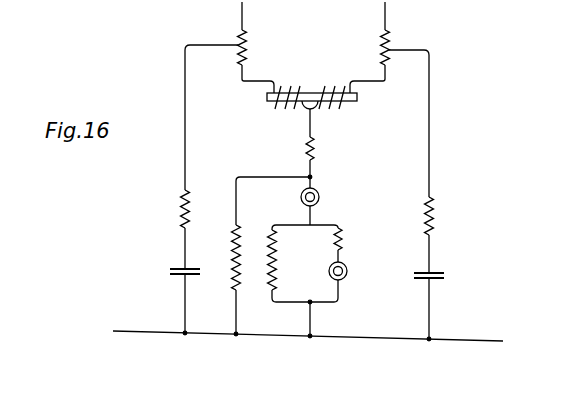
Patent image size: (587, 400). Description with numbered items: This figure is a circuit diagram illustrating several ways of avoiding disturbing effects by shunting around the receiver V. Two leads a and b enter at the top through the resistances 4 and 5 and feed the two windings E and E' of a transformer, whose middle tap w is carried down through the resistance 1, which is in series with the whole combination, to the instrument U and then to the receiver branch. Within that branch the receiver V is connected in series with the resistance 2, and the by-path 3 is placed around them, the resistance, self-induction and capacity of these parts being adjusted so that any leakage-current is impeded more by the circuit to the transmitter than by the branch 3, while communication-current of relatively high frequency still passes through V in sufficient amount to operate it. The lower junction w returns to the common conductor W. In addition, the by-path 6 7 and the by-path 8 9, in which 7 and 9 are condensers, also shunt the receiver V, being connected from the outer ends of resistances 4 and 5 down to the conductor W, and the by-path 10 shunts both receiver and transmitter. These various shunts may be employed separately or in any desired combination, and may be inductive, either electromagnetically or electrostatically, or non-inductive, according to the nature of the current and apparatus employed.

The resistance 1 is at (316, 148).
The resistance 2 is at (345, 239).
The by-path 3 is at (279, 260).
The resistor 4 is at (250, 47).
The resistor 5 is at (378, 47).
The by-path 6 is at (177, 209).
The condenser 7 is at (176, 274).
The by-path 8 is at (436, 216).
The condenser 9 is at (435, 279).
The by-path 10 is at (224, 257).
The input terminal a is at (249, 16).
The input terminal b is at (392, 16).
The transformer winding E is at (312, 88).
The transformer winding E' is at (332, 88).
The measuring instrument U is at (317, 197).
The receiver V is at (345, 271).
The connection point w is at (314, 218).
The common return conductor W is at (308, 330).